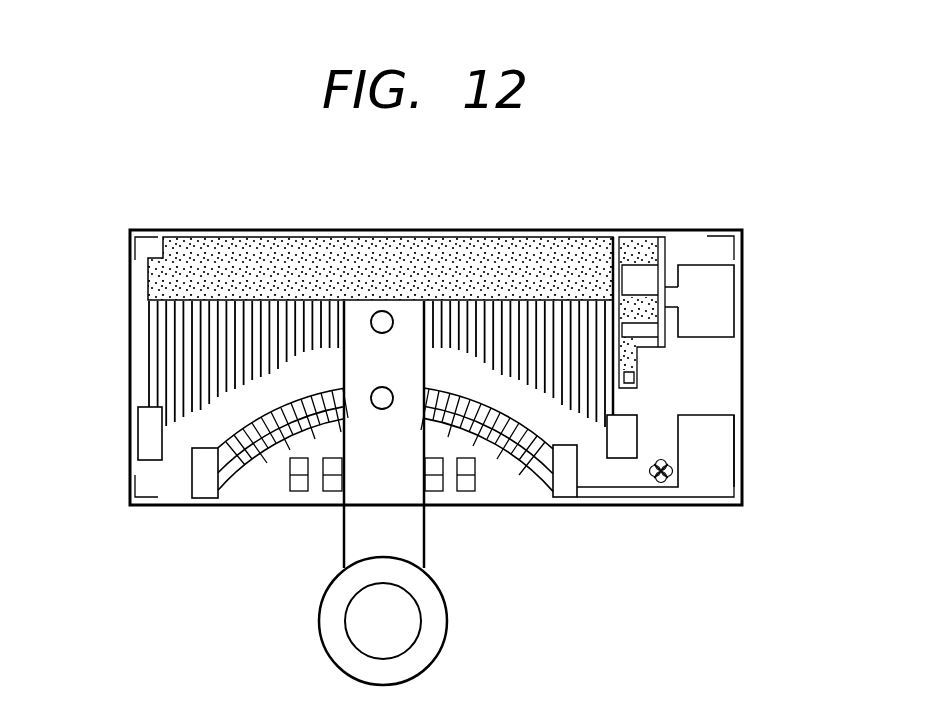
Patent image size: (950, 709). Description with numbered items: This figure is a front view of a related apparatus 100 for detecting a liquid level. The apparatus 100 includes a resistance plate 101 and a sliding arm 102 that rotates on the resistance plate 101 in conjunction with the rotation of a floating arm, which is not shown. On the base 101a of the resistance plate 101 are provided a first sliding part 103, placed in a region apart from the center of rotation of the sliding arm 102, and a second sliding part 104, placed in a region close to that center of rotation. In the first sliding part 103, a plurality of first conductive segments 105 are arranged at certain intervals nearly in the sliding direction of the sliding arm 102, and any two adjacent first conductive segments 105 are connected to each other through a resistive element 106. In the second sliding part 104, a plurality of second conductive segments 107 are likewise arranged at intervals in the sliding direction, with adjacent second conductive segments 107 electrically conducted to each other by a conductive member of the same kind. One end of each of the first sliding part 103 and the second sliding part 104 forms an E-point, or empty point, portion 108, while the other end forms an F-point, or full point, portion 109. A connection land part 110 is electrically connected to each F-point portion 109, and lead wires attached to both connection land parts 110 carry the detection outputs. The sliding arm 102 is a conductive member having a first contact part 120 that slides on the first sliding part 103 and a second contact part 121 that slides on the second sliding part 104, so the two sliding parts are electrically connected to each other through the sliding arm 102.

The apparatus for detecting a liquid level 100 is at (118, 233).
The resistance plate 101 is at (717, 223).
The base 101a is at (720, 378).
The sliding arm 102 is at (403, 530).
The first sliding part 103 is at (132, 370).
The second sliding part 104 is at (180, 480).
The first conductive segments 105 is at (184, 337).
The resistive element 106 is at (278, 237).
The second conductive segments 107 is at (263, 453).
The E-point portion 108 is at (148, 430).
The F-point portion 109 is at (568, 492).
The connection land part 110 is at (720, 301).
The first contact part 120 is at (389, 316).
The second contact part 121 is at (389, 392).